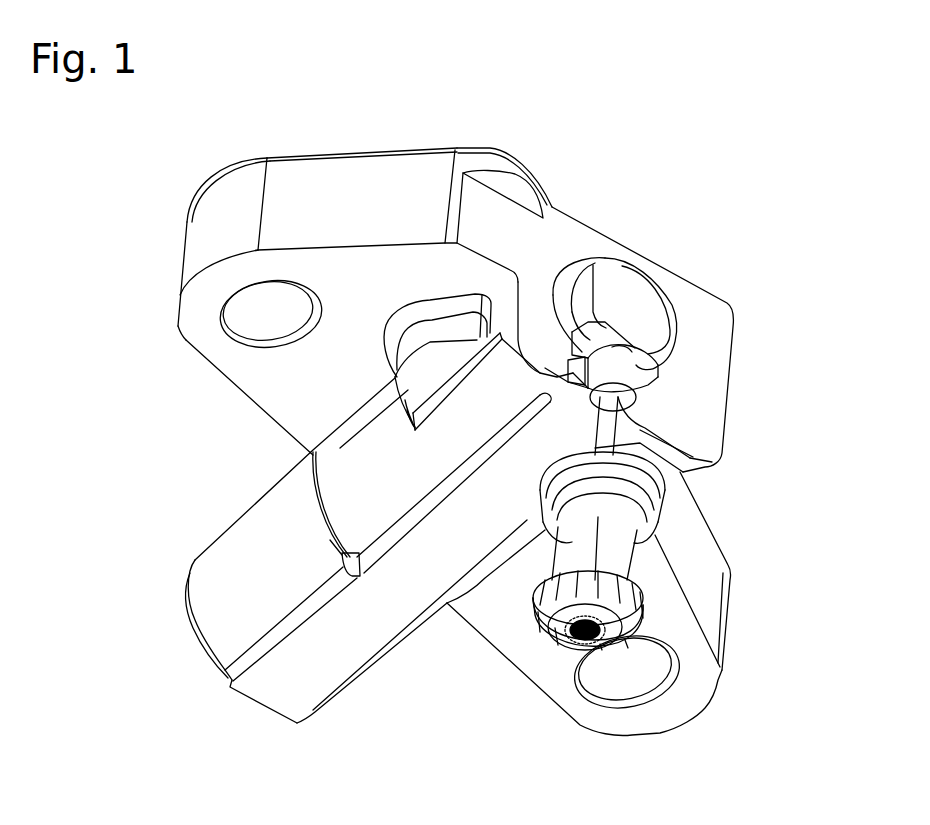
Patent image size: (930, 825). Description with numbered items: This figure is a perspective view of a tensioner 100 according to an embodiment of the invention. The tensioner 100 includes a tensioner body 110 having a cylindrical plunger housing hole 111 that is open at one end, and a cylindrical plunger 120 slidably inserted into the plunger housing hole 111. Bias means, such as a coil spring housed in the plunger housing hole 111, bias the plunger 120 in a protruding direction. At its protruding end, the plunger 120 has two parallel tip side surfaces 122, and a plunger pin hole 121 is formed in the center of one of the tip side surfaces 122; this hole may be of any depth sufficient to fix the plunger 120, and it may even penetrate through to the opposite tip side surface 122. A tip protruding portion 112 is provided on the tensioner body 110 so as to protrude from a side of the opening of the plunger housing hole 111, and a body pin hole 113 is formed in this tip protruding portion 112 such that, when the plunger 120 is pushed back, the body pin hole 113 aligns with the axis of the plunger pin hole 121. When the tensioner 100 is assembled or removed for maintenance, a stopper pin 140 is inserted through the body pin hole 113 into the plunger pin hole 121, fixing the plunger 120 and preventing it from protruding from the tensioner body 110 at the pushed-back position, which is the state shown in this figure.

The tensioner 100 is at (135, 213).
The tensioner body 110 is at (347, 508).
The plunger housing hole 111 is at (570, 252).
The tip protruding portion 112 is at (660, 356).
The body pin hole 113 is at (650, 432).
The plunger 120 is at (650, 282).
The plunger pin hole 121 is at (630, 340).
The tip side surfaces 122 is at (653, 307).
The stopper pin 140 is at (683, 473).